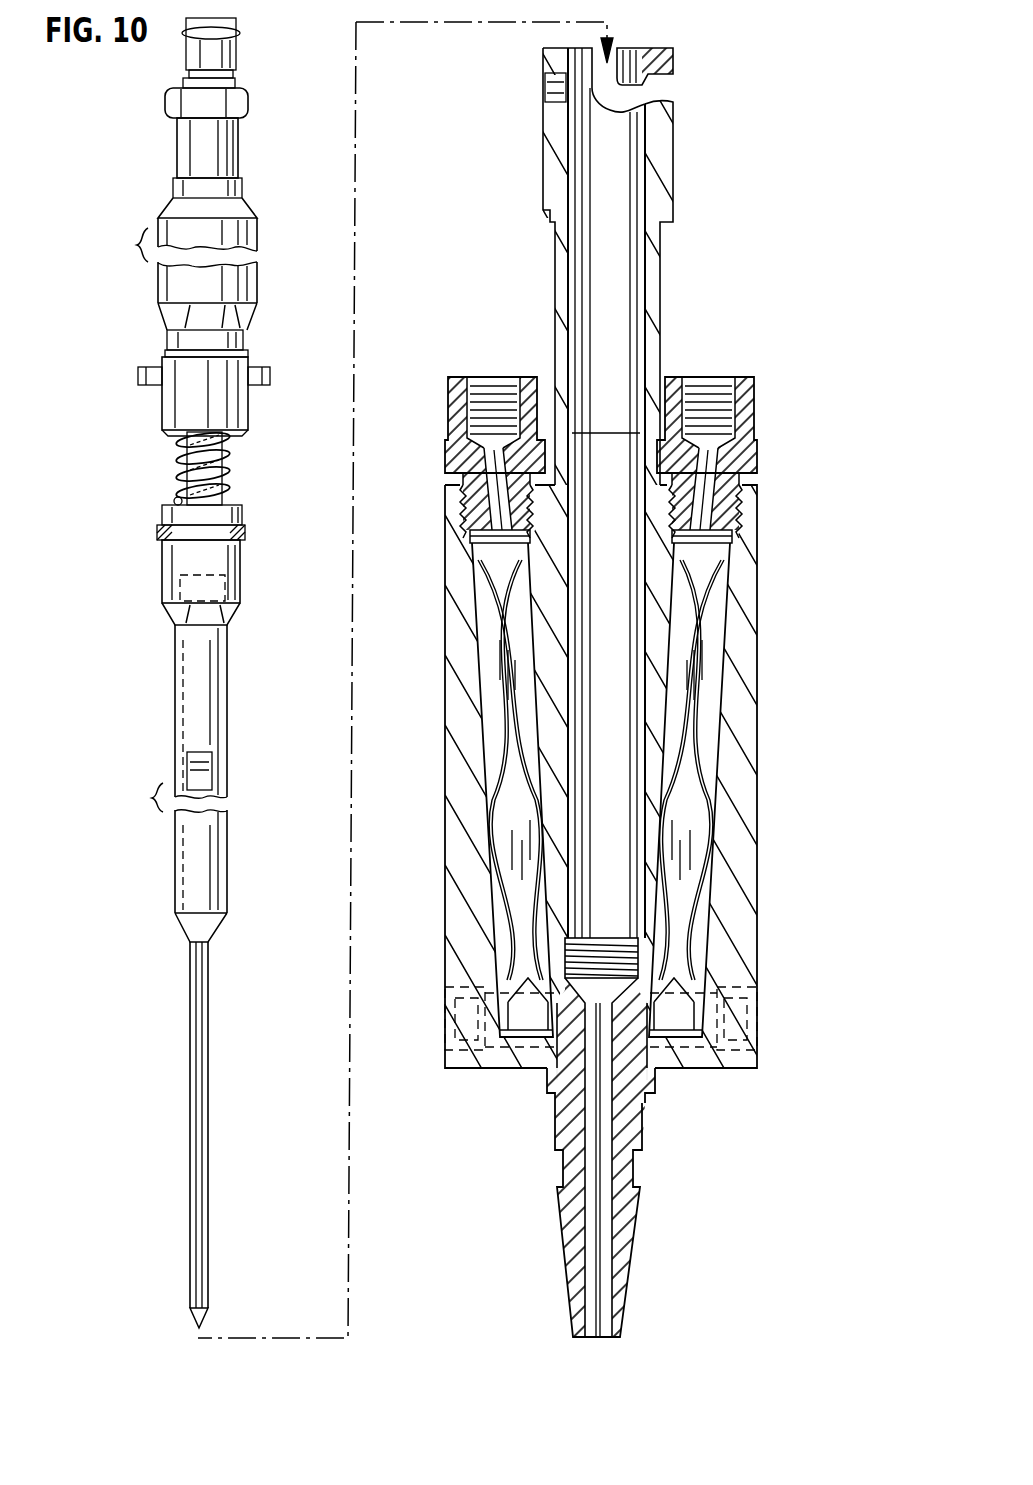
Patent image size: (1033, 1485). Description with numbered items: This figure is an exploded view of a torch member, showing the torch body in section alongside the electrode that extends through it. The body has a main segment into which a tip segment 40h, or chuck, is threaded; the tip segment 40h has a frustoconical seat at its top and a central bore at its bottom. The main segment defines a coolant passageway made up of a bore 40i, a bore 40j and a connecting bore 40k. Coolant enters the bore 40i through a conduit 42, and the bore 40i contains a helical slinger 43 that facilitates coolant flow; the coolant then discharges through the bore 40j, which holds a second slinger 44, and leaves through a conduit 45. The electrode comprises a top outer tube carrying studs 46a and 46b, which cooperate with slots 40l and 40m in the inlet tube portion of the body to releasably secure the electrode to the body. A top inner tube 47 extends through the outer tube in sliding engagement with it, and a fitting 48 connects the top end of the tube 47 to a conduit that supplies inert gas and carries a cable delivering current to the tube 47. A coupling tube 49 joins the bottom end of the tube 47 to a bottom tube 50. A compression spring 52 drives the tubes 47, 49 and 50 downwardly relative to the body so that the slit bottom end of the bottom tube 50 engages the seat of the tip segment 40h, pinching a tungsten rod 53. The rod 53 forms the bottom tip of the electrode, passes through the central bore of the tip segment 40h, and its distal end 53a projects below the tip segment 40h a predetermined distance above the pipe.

The tip segment 40h is at (638, 1227).
The bore 40i is at (485, 575).
The bore 40j is at (722, 570).
The connecting bore 40k is at (653, 1090).
The slot 40l is at (662, 80).
The slot 40m is at (543, 116).
The conduit 42 is at (462, 382).
The helical slinger 43 is at (532, 706).
The slinger 44 is at (700, 676).
The conduit 45 is at (757, 400).
The stud 46a is at (257, 365).
The stud 46b is at (150, 381).
The top inner tube 47 is at (242, 140).
The fitting 48 is at (240, 100).
The coupling tube 49 is at (240, 585).
The bottom tube 50 is at (226, 742).
The compression spring 52 is at (232, 470).
The tungsten rod 53 is at (186, 1135).
The distal end 53a is at (200, 1328).